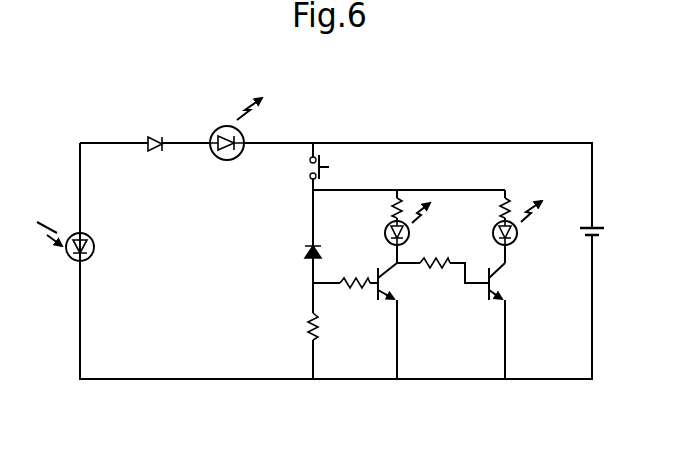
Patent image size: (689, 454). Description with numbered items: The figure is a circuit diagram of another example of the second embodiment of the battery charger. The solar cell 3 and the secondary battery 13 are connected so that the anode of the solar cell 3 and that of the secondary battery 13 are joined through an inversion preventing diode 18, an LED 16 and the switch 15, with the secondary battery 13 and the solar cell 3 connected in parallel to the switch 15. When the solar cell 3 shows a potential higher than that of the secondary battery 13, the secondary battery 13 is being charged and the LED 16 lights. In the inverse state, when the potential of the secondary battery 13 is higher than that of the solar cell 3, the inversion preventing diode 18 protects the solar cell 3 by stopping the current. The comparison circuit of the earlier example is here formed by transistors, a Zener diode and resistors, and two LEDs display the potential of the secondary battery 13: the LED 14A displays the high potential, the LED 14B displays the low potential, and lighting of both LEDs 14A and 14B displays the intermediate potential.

The solar cell 3 is at (74, 259).
The secondary battery 13 is at (604, 234).
The LED 14A is at (385, 232).
The LED 14B is at (493, 232).
The switch 15 is at (311, 173).
The LED 16 is at (223, 161).
The inversion preventing diode 18 is at (157, 154).